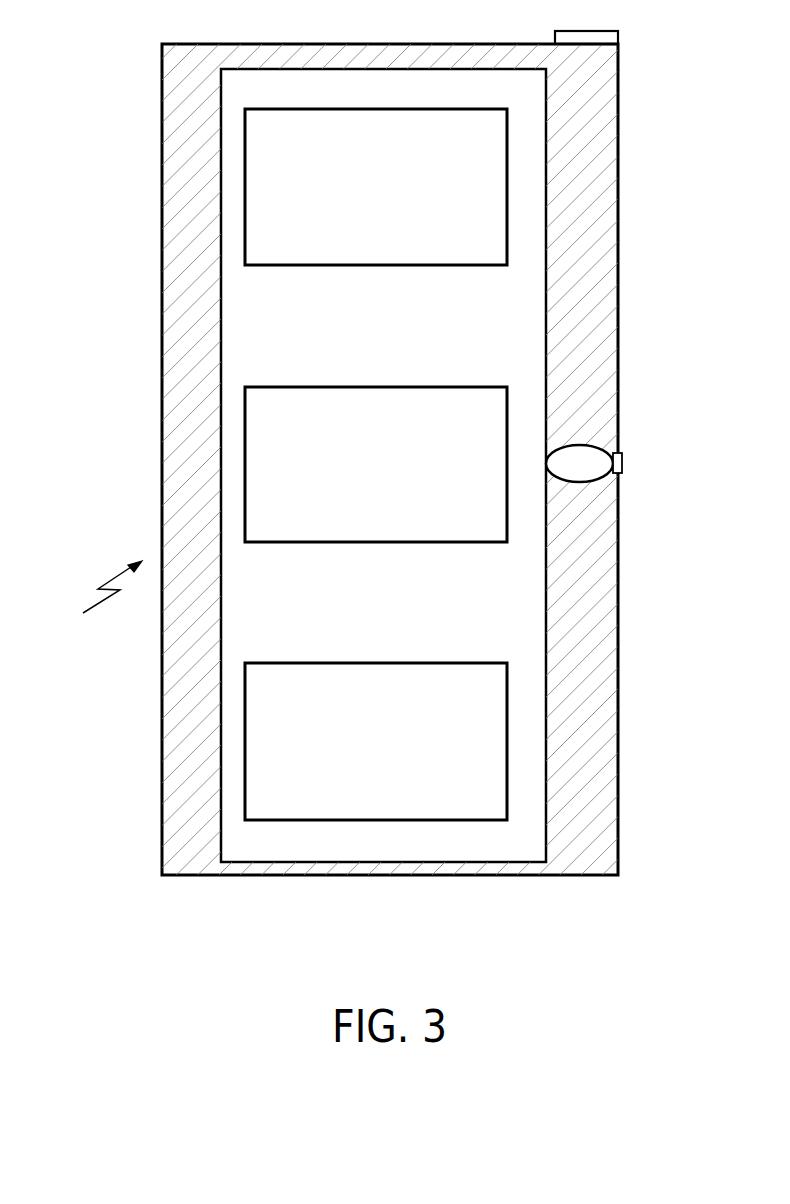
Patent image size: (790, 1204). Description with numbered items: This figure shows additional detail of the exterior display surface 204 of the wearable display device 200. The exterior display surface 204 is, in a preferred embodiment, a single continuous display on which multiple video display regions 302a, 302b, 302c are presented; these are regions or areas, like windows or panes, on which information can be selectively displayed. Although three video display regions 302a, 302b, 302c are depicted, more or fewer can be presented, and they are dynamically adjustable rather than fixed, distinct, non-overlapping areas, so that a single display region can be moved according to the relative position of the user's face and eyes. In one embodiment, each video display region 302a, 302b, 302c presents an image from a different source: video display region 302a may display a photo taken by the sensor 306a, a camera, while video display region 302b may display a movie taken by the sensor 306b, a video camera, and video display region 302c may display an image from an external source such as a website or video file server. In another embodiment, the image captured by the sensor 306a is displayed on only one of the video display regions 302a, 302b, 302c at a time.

The wearable display device 200 is at (88, 602).
The exterior display surface 204 is at (222, 369).
The video display region 302a is at (328, 257).
The video display region 302b is at (447, 395).
The video display region 302c is at (427, 670).
The sensor 306a is at (619, 44).
The sensor 306b is at (622, 463).